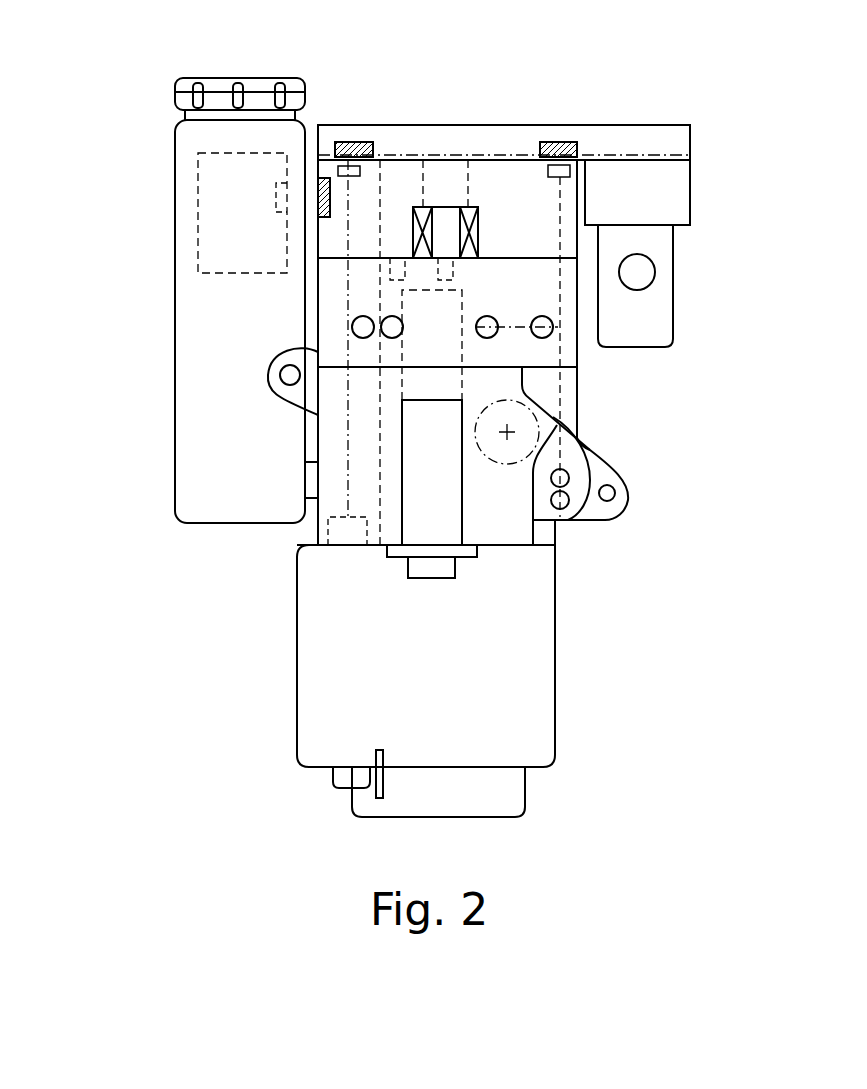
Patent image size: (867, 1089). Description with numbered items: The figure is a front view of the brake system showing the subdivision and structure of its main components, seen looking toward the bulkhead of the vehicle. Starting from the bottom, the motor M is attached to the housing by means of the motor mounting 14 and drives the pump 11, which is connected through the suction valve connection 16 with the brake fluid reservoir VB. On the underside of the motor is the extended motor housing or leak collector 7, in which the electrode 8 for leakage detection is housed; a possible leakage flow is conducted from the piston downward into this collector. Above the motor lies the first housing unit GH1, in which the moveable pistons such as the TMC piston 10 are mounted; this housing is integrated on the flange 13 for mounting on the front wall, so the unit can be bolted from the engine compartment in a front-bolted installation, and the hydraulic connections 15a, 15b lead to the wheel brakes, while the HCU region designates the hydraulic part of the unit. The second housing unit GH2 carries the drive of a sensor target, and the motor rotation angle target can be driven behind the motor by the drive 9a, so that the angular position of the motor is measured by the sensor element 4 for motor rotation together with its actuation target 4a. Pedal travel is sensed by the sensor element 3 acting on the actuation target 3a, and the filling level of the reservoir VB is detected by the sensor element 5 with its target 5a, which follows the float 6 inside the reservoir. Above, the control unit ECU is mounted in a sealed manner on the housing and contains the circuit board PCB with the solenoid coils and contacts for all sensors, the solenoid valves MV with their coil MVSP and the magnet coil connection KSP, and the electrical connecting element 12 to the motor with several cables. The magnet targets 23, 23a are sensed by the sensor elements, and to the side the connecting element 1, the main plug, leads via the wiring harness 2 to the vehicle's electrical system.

The connecting element (main plug) 1 is at (653, 313).
The wiring harness 2 is at (640, 276).
The sensor element for pedal travel 3 is at (553, 140).
The actuation target for pedal travel sensor 3a is at (562, 385).
The sensor element for motor rotation 4 is at (352, 140).
The actuation target for motor travel sensor 4a is at (347, 442).
The sensor element for filling level 5 is at (320, 176).
The target for filling level sensor 5a is at (275, 188).
The float in the reservoir 6 is at (198, 256).
The extended motor housing or leak collector 7 is at (352, 805).
The electrode 8 is at (383, 790).
The drive for target actuation of motor encoder behind the motor rotor 9a is at (338, 527).
The TMC piston 10 is at (540, 418).
The pump or pump piston 11 is at (400, 546).
The electrical connecting element to motor with several cables 12 is at (355, 322).
The flange for mounting on front wall 13 is at (268, 380).
The motor mounting 14 is at (443, 570).
The hydraulic connection to wheel brake 15a is at (383, 331).
The hydraulic connection to wheel brake 15b is at (556, 330).
The connection to pump suction valve 16 is at (333, 482).
The target (magnet) 23 is at (346, 126).
The target (magnet) 23a is at (586, 185).
The brake fluid reservoir VB is at (175, 148).
The solenoid valves MV is at (442, 213).
The solenoid valve coil MVSP is at (480, 245).
The magnet coil connection KSP is at (400, 175).
The circuit board PCB is at (597, 150).
The control unit ECU is at (673, 148).
The hydraulic control unit HCU is at (470, 339).
The first housing unit GH1 is at (528, 522).
The second housing unit GH2 is at (568, 340).
The motor M is at (426, 643).